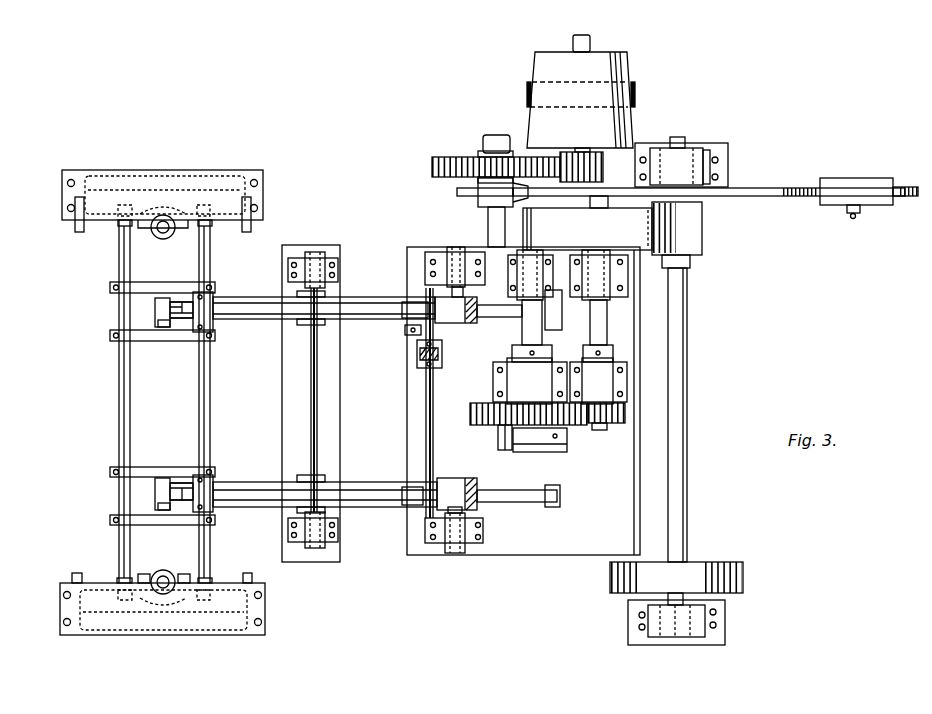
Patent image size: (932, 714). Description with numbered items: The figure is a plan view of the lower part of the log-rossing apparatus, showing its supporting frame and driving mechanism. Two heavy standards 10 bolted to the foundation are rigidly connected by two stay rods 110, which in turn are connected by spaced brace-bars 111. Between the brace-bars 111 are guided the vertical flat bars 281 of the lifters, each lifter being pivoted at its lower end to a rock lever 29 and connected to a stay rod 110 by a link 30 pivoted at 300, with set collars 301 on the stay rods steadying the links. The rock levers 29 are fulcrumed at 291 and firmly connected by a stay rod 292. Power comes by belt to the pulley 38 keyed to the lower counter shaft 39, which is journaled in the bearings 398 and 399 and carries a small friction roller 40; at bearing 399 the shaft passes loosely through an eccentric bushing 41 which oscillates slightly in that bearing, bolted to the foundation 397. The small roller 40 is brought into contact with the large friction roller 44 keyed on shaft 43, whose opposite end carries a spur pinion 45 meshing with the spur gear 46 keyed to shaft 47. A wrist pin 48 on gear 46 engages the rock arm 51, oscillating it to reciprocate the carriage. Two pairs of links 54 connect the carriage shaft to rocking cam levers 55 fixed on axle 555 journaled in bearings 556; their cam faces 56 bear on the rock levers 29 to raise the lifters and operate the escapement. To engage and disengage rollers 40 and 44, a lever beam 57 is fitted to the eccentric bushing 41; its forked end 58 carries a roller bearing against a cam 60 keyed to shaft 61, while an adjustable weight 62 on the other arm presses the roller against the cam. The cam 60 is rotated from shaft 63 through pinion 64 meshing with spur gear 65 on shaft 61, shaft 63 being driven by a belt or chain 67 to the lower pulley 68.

The standard 10 is at (160, 166).
The stay rod 110 is at (118, 410).
The brace-bar 111 is at (142, 287).
The pivot of link 300 is at (163, 300).
The set collar 301 is at (205, 313).
The link 30 is at (180, 318).
The vertical flat bar 281 is at (162, 330).
The rock lever 29 is at (246, 308).
The fulcrum of rock levers 291 is at (308, 358).
The stay rod 292 is at (424, 420).
The link 54 is at (365, 297).
The rocking cam lever 55 is at (446, 298).
The rock arm 51 is at (413, 362).
The axle 555 is at (456, 462).
The bearing 556 is at (443, 545).
The cam face 56 is at (541, 506).
The shaft 47 is at (520, 342).
The shaft 43 is at (592, 337).
The spur gear 46 is at (567, 428).
The spur pinion 45 is at (607, 428).
The wrist pin 48 is at (500, 440).
The forked end 58 is at (551, 447).
The large friction roller 44 is at (587, 223).
The small friction roller 40 is at (705, 243).
The lower counter shaft 39 is at (688, 407).
The pulley 38 is at (713, 568).
The foundation 397 is at (729, 153).
The bearing 398 is at (695, 636).
The bearing 399 is at (706, 150).
The eccentric bushing 41 is at (693, 148).
The lever beam 57 is at (760, 189).
The adjustable weight 62 is at (850, 178).
The cam 60 is at (458, 193).
The shaft 61 is at (488, 218).
The spur gear 65 is at (452, 157).
The pinion 64 is at (593, 165).
The lower pulley 68 is at (581, 100).
The belt or chain 67 is at (636, 92).
The shaft 63 is at (590, 40).